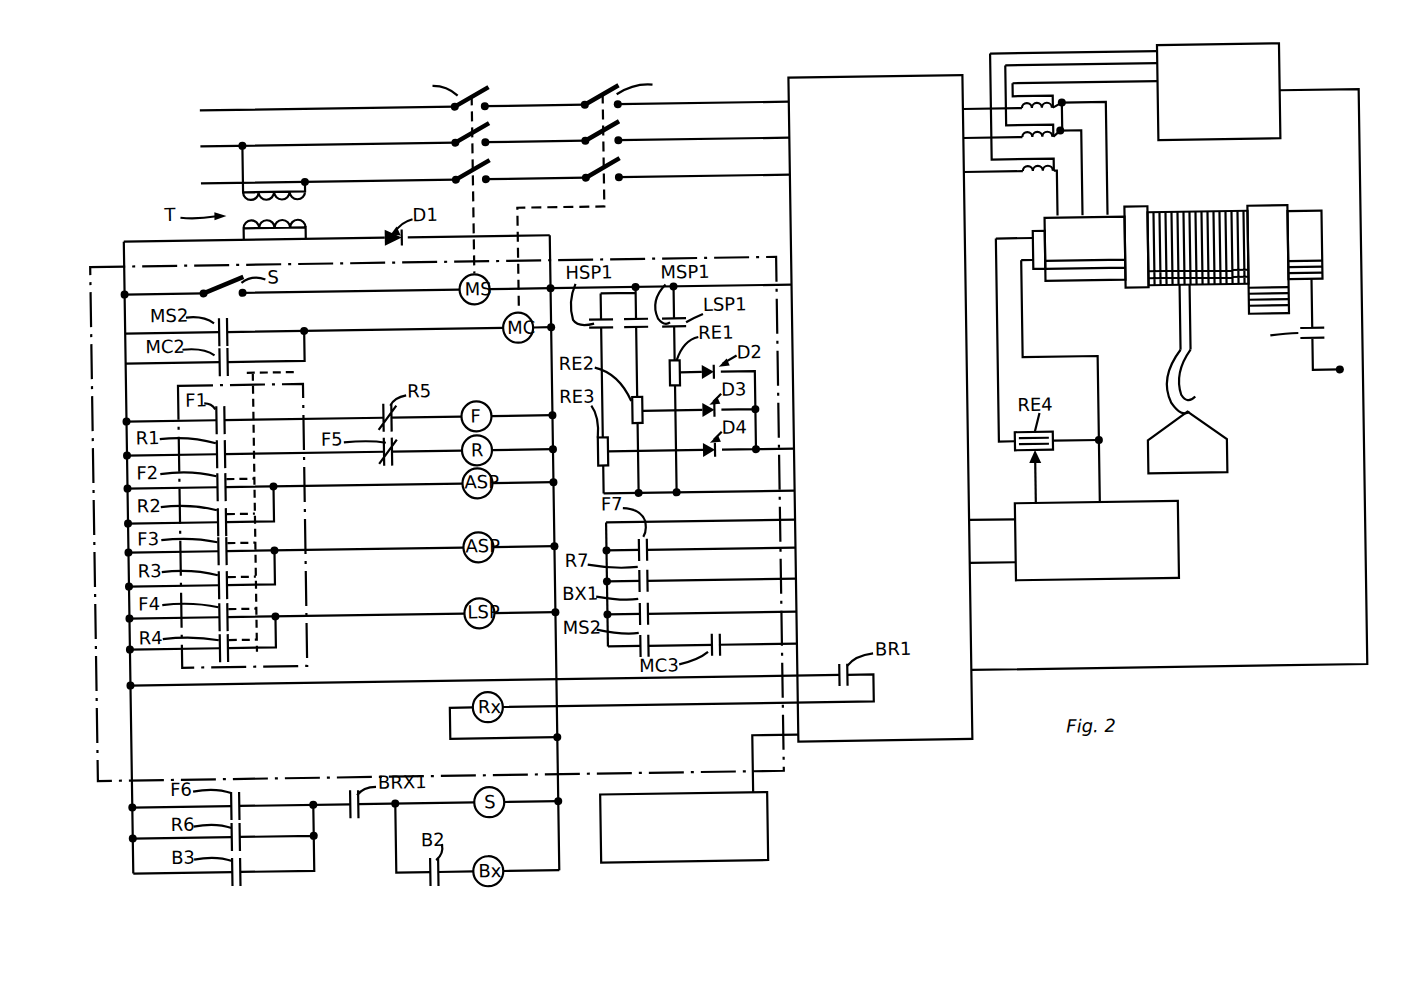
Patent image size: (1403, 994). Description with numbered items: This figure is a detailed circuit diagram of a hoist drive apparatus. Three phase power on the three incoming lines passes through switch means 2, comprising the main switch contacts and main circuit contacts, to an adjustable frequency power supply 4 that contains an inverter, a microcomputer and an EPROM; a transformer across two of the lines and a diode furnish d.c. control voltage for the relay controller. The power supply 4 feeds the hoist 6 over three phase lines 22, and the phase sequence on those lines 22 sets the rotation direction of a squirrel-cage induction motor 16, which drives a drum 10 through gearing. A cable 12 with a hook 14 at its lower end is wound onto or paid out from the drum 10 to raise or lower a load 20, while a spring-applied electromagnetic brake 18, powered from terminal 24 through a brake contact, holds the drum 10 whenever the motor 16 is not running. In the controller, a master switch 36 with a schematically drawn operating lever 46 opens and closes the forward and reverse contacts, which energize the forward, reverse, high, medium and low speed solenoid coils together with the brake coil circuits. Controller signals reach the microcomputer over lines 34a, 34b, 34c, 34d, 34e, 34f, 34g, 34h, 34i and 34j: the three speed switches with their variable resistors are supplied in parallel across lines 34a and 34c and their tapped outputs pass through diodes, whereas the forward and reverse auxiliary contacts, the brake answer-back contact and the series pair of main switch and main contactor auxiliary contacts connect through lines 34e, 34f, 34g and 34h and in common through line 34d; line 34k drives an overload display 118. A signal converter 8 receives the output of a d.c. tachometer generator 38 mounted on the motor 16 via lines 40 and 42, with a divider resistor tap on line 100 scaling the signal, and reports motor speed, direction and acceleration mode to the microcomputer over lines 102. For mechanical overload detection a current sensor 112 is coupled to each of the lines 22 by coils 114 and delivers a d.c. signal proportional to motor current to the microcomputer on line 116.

The switch means 2 is at (563, 79).
The adjustable frequency power supply 4 is at (898, 777).
The hoist 6 is at (1311, 178).
The signal converter 8 is at (1188, 542).
The drum 10 is at (1214, 193).
The cable 12 is at (1192, 318).
The hook 14 is at (1204, 405).
The motor 16 is at (1112, 305).
The electromagnetic brake 18 is at (1334, 204).
The load 20 is at (1228, 450).
The lines 22 is at (1112, 198).
The terminal 24 is at (1341, 379).
The line 34a is at (748, 284).
The line 34b is at (780, 456).
The line 34c is at (748, 494).
The line 34d is at (748, 523).
The line 34e is at (748, 551).
The line 34f is at (748, 582).
The line 34g is at (748, 615).
The line 34h is at (780, 647).
The line 34i is at (748, 679).
The line 34j is at (746, 706).
The line 34k is at (748, 752).
The master switch 36 is at (314, 531).
The d.c. tachometer generator 38 is at (1036, 240).
The line 40 is at (1100, 384).
The line 42 is at (1001, 382).
The operating lever 46 is at (300, 366).
The line 100 is at (1028, 470).
The lines 102 is at (998, 545).
The current sensor 112 is at (1246, 50).
The coils 114 is at (1045, 105).
The line 116 is at (1318, 100).
The overload display 118 is at (762, 846).